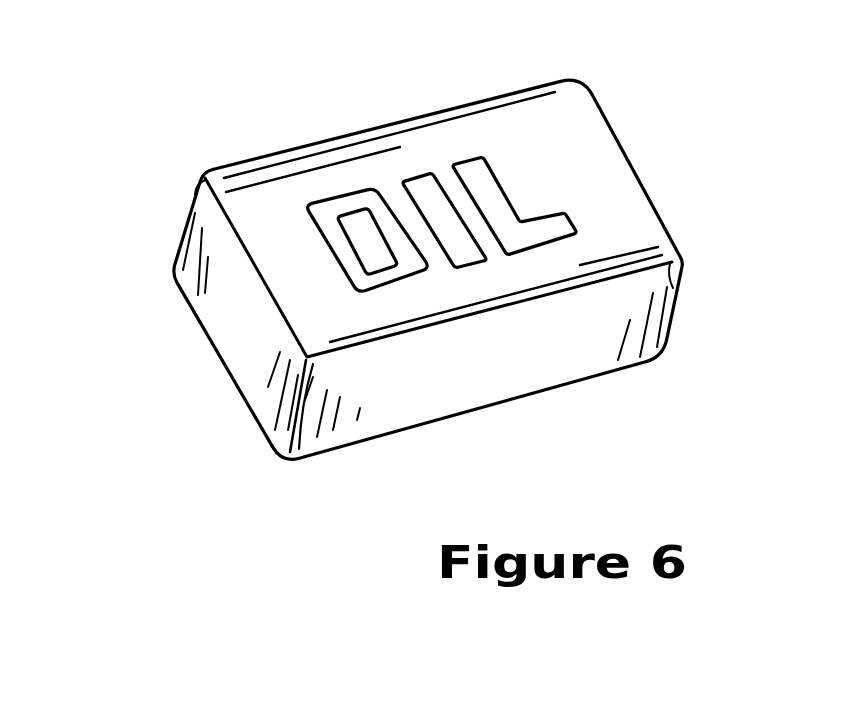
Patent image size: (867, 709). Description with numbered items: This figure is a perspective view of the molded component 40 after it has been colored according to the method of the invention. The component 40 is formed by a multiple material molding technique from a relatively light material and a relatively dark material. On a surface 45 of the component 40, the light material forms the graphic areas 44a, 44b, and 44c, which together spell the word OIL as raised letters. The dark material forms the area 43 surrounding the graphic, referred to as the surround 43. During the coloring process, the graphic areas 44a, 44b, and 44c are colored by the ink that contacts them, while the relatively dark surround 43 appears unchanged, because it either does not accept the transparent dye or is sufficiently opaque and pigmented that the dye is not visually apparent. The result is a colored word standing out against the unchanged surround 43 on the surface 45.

The component 40 is at (214, 160).
The surround 43 is at (582, 172).
The graphic area 44a is at (332, 208).
The graphic area 44b is at (415, 182).
The graphic area 44c is at (468, 173).
The surface 45 is at (280, 274).